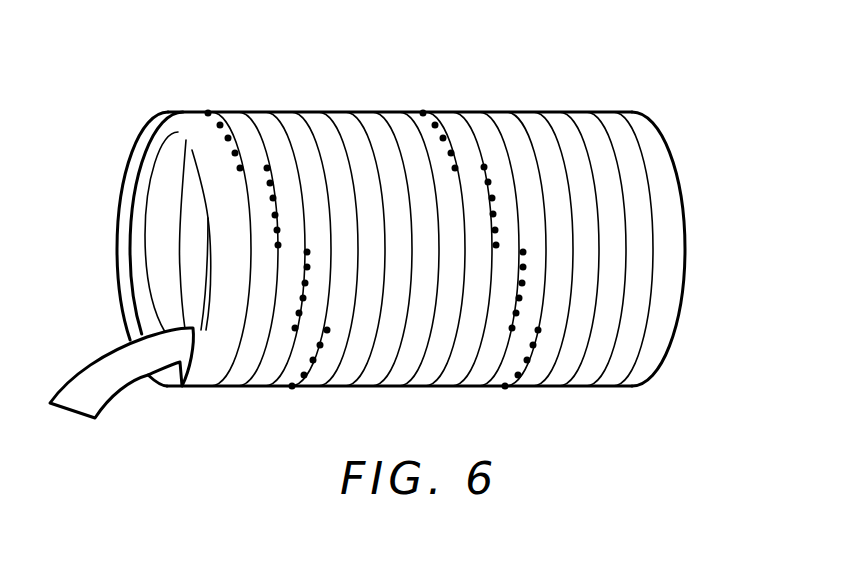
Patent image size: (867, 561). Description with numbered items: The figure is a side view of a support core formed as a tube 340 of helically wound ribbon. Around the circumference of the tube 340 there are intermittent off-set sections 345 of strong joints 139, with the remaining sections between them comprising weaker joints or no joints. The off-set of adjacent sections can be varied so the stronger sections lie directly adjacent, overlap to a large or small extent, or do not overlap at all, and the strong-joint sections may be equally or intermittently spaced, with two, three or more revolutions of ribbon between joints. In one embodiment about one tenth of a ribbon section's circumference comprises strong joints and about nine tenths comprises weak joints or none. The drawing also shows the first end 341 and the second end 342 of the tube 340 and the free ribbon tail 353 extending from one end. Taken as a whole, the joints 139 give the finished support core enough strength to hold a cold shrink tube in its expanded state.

The tube 340 is at (407, 229).
The first end of coil 341 is at (128, 195).
The second end of coil 342 is at (678, 313).
The off-set sections 345 is at (280, 266).
The strong joints 139 is at (450, 143).
The ribbon tail 353 is at (107, 375).